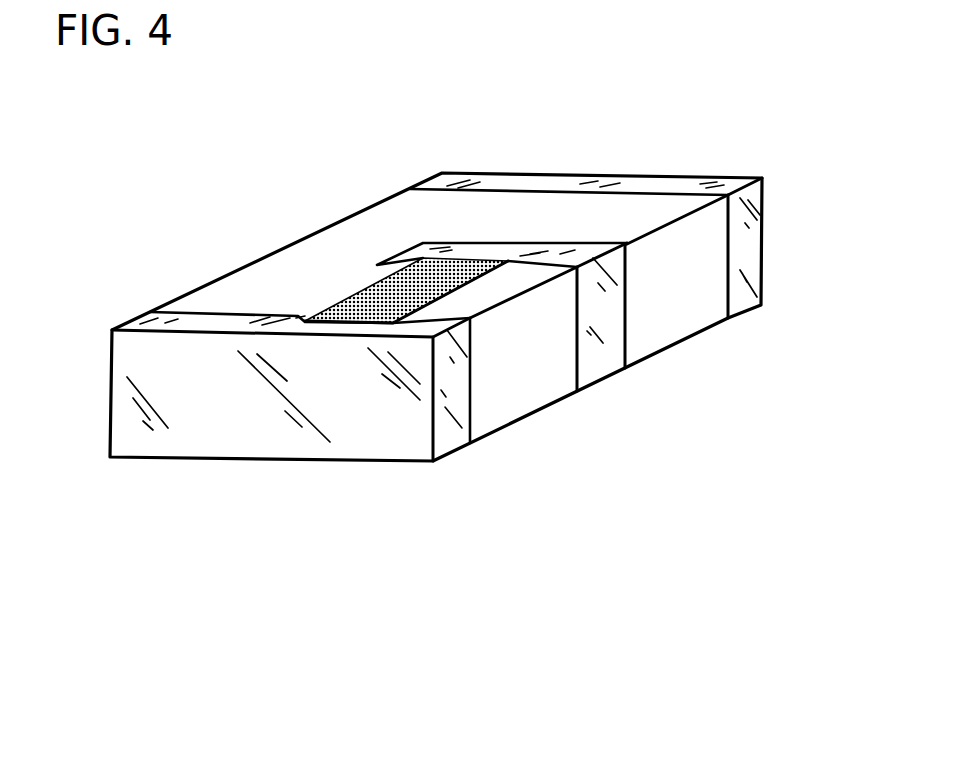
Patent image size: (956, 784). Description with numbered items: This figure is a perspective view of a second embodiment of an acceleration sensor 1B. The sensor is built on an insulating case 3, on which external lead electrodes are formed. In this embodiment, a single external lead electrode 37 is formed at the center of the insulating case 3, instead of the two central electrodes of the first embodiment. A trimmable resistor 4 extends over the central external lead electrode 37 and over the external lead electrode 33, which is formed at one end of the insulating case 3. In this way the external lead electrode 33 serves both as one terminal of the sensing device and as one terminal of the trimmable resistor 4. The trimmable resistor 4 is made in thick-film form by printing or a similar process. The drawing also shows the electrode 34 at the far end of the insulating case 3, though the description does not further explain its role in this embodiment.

The acceleration sensor 1B is at (472, 327).
The insulating case 3 is at (502, 207).
The trimmable resistor 4 is at (368, 293).
The external lead electrode 33 is at (267, 443).
The second glass plate 34 is at (757, 252).
The external lead electrode 37 is at (595, 373).